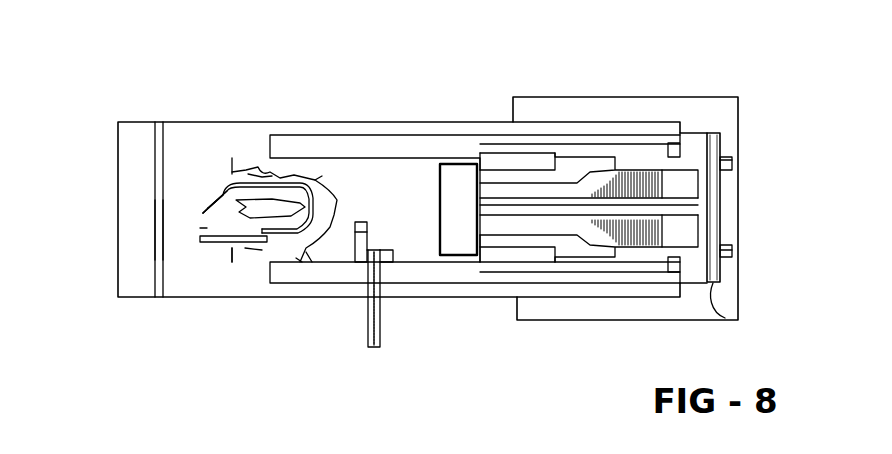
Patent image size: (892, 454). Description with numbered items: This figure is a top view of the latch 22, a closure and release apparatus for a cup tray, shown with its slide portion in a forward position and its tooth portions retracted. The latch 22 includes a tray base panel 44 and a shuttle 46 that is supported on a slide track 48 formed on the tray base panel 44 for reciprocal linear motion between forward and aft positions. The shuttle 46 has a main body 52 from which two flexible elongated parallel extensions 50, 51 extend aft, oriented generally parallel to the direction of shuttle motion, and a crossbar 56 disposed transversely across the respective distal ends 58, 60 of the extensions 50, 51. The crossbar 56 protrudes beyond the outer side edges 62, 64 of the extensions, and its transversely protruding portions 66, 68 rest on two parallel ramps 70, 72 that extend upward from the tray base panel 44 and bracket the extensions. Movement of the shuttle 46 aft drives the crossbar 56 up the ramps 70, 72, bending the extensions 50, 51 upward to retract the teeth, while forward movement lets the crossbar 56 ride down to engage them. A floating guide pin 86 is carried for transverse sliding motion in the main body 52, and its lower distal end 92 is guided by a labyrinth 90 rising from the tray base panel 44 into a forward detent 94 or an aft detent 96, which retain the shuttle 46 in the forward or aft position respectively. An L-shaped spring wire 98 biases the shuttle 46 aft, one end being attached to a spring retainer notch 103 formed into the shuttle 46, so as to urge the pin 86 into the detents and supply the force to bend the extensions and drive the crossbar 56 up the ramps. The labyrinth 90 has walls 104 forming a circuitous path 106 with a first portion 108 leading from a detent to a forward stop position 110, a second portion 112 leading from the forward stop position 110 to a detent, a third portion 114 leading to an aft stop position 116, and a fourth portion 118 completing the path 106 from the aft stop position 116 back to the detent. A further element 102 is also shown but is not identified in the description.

The latch 22 is at (715, 94).
The tray base panel 44 is at (157, 228).
The shuttle 46 is at (357, 162).
The slide track 48 is at (236, 262).
The flexible elongated parallel extension 50 is at (592, 241).
The flexible elongated parallel extension 51 is at (632, 150).
The main body 52 is at (380, 304).
The crossbar 56 is at (735, 158).
The distal end 58 is at (737, 228).
The distal end 60 is at (723, 187).
The outer side edge 62 is at (661, 216).
The outer side edge 64 is at (690, 140).
The transversely protruding portion 66 is at (725, 318).
The transversely protruding portion 68 is at (713, 133).
The ramp 70 is at (733, 255).
The ramp 72 is at (733, 166).
The floating guide pin 86 is at (291, 144).
The labyrinth 90 is at (218, 184).
The lower distal end 92 is at (297, 186).
The forward detent 94 is at (322, 173).
The aft detent 96 is at (250, 256).
The L-shaped spring wire 98 is at (382, 287).
The rectangular member 102 is at (386, 165).
The spring retainer notch 103 is at (368, 229).
The walls 104 is at (258, 177).
The circuitous path 106 is at (302, 262).
The first portion 108 is at (292, 173).
The forward stop position 110 is at (205, 185).
The second portion 112 is at (223, 188).
The third portion 114 is at (230, 262).
The aft stop position 116 is at (207, 228).
The fourth portion 118 is at (312, 262).